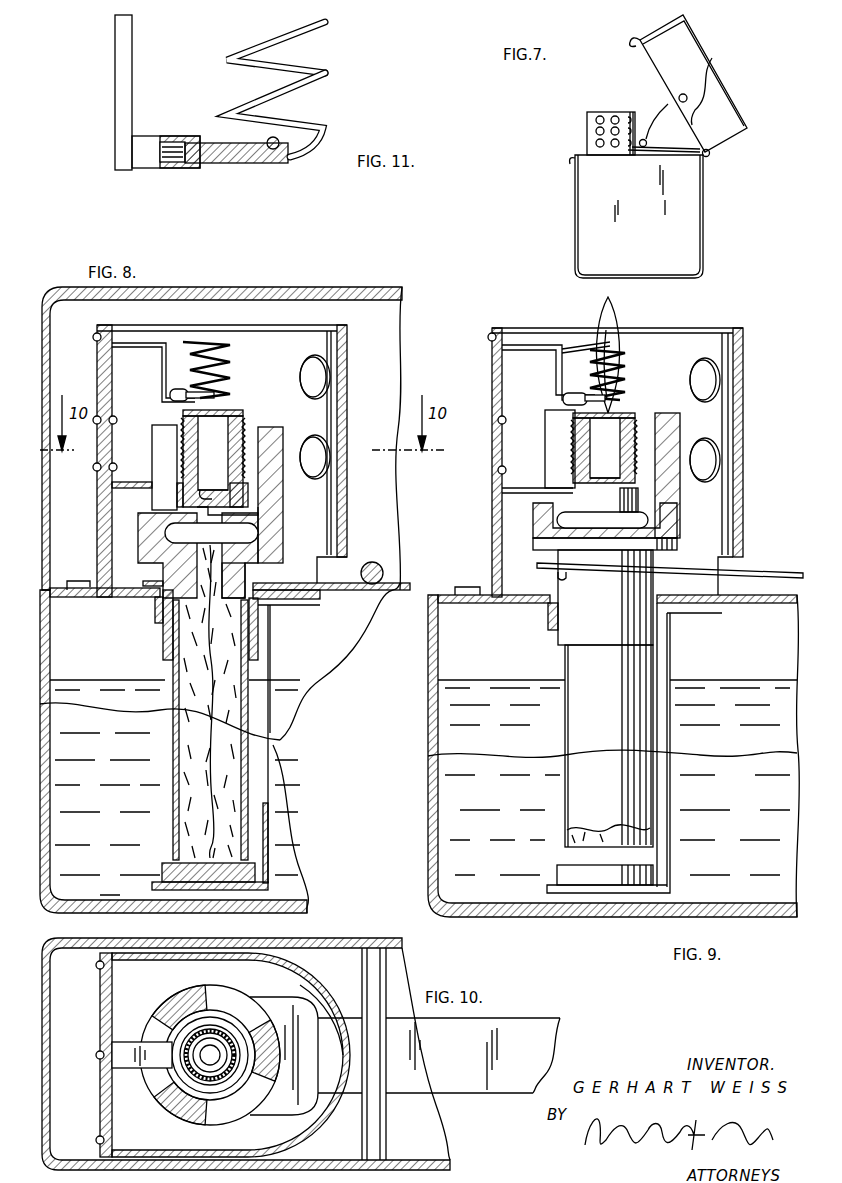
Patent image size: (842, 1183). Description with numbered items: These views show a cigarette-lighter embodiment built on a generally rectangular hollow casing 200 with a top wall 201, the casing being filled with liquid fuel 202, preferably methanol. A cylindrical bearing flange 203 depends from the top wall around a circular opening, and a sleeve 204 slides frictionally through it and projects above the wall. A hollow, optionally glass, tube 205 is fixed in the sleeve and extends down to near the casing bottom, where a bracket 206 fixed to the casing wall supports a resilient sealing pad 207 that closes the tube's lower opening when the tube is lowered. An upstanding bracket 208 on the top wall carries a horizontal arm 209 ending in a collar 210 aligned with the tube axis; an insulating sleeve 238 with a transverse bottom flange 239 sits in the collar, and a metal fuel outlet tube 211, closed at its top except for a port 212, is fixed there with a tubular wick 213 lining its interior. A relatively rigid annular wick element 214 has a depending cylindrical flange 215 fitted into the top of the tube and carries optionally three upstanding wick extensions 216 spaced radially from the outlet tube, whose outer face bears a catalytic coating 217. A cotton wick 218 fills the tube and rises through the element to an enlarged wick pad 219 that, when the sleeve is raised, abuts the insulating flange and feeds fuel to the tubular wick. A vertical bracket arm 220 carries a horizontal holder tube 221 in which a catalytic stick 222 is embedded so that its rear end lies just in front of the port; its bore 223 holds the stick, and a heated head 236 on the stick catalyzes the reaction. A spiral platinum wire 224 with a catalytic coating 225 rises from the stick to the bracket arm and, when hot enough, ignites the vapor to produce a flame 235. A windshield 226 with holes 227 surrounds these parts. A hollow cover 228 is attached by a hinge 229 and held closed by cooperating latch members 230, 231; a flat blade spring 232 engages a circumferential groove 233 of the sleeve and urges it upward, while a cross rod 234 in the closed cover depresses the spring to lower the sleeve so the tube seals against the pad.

In FIG. 7, the casing 200 is at (688, 240).
In FIG. 8, the casing 200 is at (305, 910).
In FIG. 9, the casing 200 is at (428, 840).
In FIG. 8, the top wall 201 is at (95, 598).
In FIG. 9, the top wall 201 is at (617, 599).
In FIG. 8, the liquid fuel 202 is at (306, 694).
In FIG. 9, the liquid fuel 202 is at (612, 777).
In FIG. 8, the bearing flange 203 is at (263, 620).
In FIG. 9, the bearing flange 203 is at (665, 625).
In FIG. 8, the sleeve 204 is at (166, 640).
In FIG. 9, the sleeve 204 is at (548, 615).
In FIG. 8, the tube 205 is at (172, 790).
In FIG. 9, the tube 205 is at (570, 795).
In FIG. 8, the bracket 206 is at (270, 834).
In FIG. 9, the bracket 206 is at (672, 665).
In FIG. 8, the sealing pad 207 is at (256, 876).
In FIG. 9, the sealing pad 207 is at (560, 875).
In FIG. 8, the upstanding bracket 208 is at (99, 540).
In FIG. 9, the upstanding bracket 208 is at (495, 366).
In FIG. 10, the upstanding bracket 208 is at (100, 998).
In FIG. 8, the horizontal arm 209 is at (138, 484).
In FIG. 10, the horizontal arm 209 is at (130, 1062).
In FIG. 8, the collar 210 is at (246, 500).
In FIG. 9, the collar 210 is at (640, 500).
In FIG. 10, the collar 210 is at (247, 1062).
In FIG. 8, the fuel outlet tube 211 is at (232, 418).
In FIG. 9, the fuel outlet tube 211 is at (573, 440).
In FIG. 10, the fuel outlet tube 211 is at (180, 1040).
In FIG. 8, the port 212 is at (212, 410).
In FIG. 9, the port 212 is at (612, 412).
In FIG. 8, the tubular wick 213 is at (202, 488).
In FIG. 9, the tubular wick 213 is at (590, 470).
In FIG. 10, the tubular wick 213 is at (190, 1075).
In FIG. 8, the wick element 214 is at (279, 555).
In FIG. 9, the wick element 214 is at (535, 522).
In FIG. 10, the wick element 214 is at (218, 990).
In FIG. 8, the cylindrical flange 215 is at (240, 584).
In FIG. 8, the wick extensions 216 is at (178, 426).
In FIG. 9, the wick extensions 216 is at (568, 456).
In FIG. 10, the wick extensions 216 is at (185, 988).
In FIG. 8, the catalytic coating 217 is at (248, 437).
In FIG. 9, the catalytic coating 217 is at (636, 421).
In FIG. 10, the catalytic coating 217 is at (226, 1030).
In FIG. 8, the wick 218 is at (195, 762).
In FIG. 8, the wick pad 219 is at (256, 533).
In FIG. 9, the wick pad 219 is at (650, 520).
In FIG. 11, the bracket arm 220 is at (125, 80).
In FIG. 8, the bracket arm 220 is at (162, 370).
In FIG. 9, the bracket arm 220 is at (558, 367).
In FIG. 11, the holder tube 221 is at (148, 135).
In FIG. 8, the holder tube 221 is at (172, 393).
In FIG. 9, the holder tube 221 is at (566, 394).
In FIG. 11, the catalytic stick 222 is at (235, 164).
In FIG. 11, the bore 223 is at (190, 166).
In FIG. 11, the platinum wire 224 is at (308, 30).
In FIG. 11, the catalytic coating 225 is at (298, 88).
In FIG. 8, the catalytic coating 225 is at (224, 347).
In FIG. 9, the catalytic coating 225 is at (622, 352).
In FIG. 7, the windshield 226 is at (598, 112).
In FIG. 8, the windshield 226 is at (350, 348).
In FIG. 9, the windshield 226 is at (745, 341).
In FIG. 10, the windshield 226 is at (293, 965).
In FIG. 7, the holes 227 is at (616, 119).
In FIG. 8, the holes 227 is at (328, 385).
In FIG. 9, the holes 227 is at (690, 379).
In FIG. 10, the holes 227 is at (304, 984).
In FIG. 7, the cover 228 is at (728, 112).
In FIG. 8, the cover 228 is at (372, 291).
In FIG. 10, the cover 228 is at (403, 942).
In FIG. 7, the hinge 229 is at (711, 154).
In FIG. 7, the latch member 230 is at (630, 43).
In FIG. 7, the latch member 231 is at (572, 160).
In FIG. 7, the blade spring 232 is at (656, 153).
In FIG. 8, the blade spring 232 is at (401, 583).
In FIG. 9, the blade spring 232 is at (770, 573).
In FIG. 10, the blade spring 232 is at (538, 1025).
In FIG. 8, the circumferential groove 233 is at (148, 583).
In FIG. 9, the circumferential groove 233 is at (558, 578).
In FIG. 7, the cross rod 234 is at (683, 95).
In FIG. 8, the cross rod 234 is at (381, 565).
In FIG. 10, the cross rod 234 is at (380, 975).
In FIG. 9, the flame 235 is at (612, 322).
In FIG. 11, the head 236 is at (285, 158).
In FIG. 8, the sleeve 238 is at (215, 494).
In FIG. 8, the bottom flange 239 is at (196, 509).